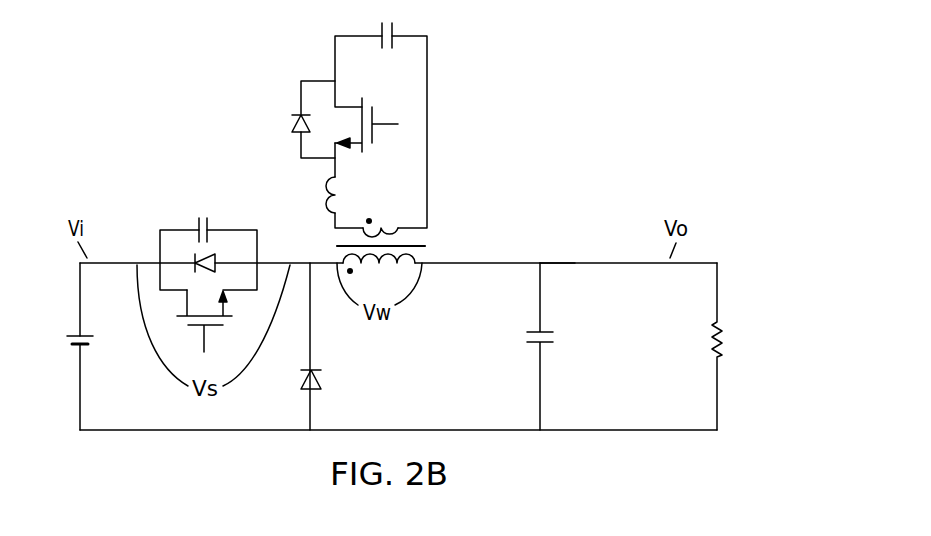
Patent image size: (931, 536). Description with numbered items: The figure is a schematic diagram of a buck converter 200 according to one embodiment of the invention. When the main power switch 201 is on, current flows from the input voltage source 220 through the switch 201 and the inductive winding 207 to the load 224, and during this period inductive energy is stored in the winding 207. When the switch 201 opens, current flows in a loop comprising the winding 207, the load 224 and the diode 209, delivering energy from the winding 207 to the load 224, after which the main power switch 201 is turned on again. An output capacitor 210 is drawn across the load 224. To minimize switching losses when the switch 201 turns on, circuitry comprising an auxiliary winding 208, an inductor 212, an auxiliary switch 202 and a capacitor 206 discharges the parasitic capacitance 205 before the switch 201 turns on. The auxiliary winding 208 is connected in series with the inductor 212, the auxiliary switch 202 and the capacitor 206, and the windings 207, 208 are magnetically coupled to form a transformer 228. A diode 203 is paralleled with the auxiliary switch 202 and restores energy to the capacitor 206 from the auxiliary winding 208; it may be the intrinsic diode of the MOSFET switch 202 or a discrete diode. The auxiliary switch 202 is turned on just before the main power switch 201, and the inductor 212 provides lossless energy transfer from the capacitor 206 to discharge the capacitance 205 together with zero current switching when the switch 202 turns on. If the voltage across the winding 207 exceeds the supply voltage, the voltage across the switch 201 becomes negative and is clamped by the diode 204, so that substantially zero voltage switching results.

The converter 200 is at (542, 174).
The main power switch 201 is at (208, 328).
The auxiliary switch 202 is at (382, 114).
The diode 203 is at (291, 123).
The diode 204 is at (193, 259).
The parasitic capacitance 205 is at (203, 213).
The capacitor 206 is at (396, 28).
The inductive winding 207 is at (418, 256).
The auxiliary winding 208 is at (392, 226).
The diode 209 is at (318, 378).
The output capacitor 210 is at (556, 337).
The inductor 212 is at (327, 197).
The input voltage source 220 is at (65, 338).
The load 224 is at (724, 336).
The transformer 228 is at (345, 244).